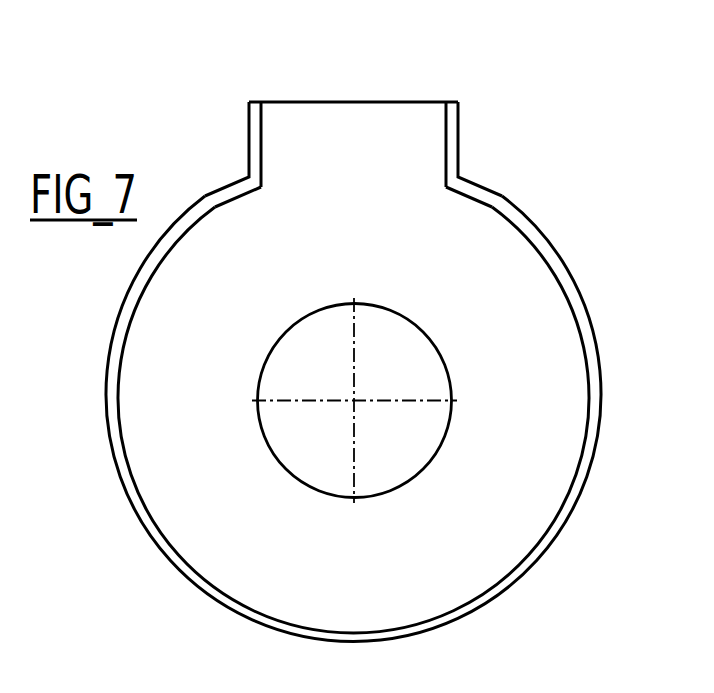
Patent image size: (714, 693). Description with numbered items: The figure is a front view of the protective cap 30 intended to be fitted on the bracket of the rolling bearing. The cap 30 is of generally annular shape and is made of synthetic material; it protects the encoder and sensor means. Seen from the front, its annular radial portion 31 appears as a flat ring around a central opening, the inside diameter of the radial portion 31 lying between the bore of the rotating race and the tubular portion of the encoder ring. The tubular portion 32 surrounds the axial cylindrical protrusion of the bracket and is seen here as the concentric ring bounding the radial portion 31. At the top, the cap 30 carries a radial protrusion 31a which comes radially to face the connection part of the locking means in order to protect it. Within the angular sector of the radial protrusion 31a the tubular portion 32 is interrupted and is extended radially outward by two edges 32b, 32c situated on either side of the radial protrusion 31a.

The protective cap 30 is at (450, 582).
The annular radial portion 31 is at (525, 536).
The radial protrusion 31a is at (377, 128).
The tubular portion 32 is at (522, 228).
The edge 32b is at (250, 138).
The edge 32c is at (453, 130).